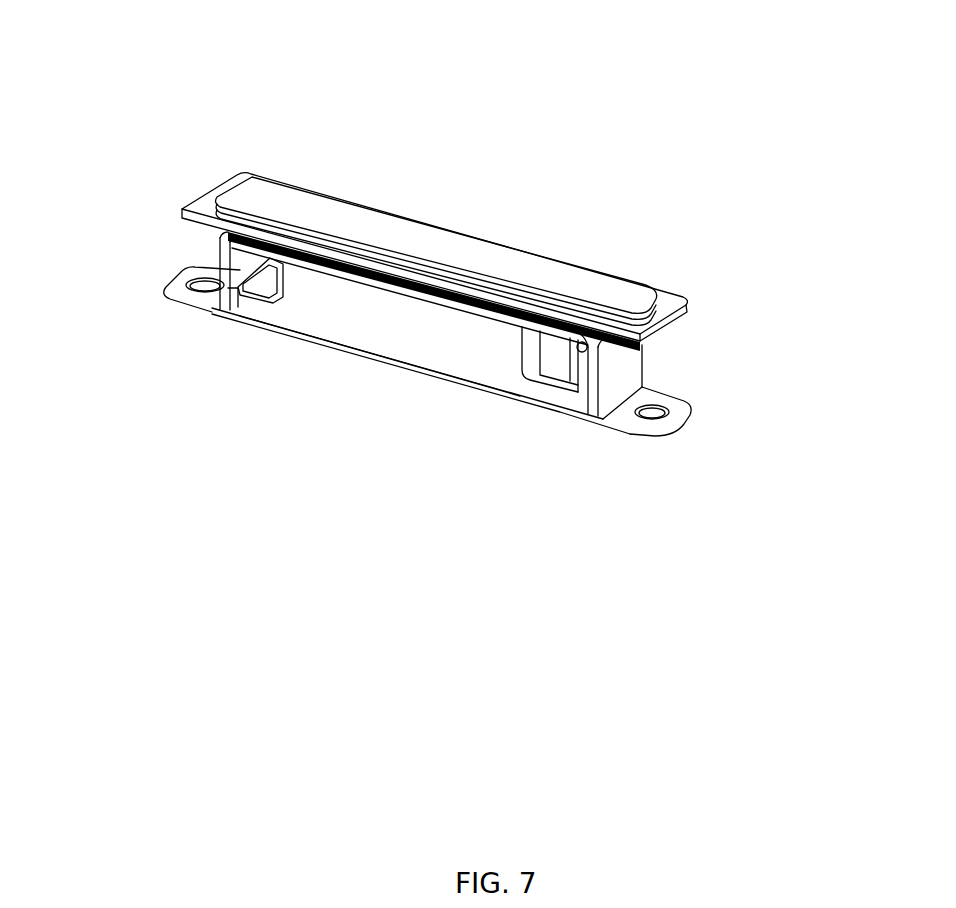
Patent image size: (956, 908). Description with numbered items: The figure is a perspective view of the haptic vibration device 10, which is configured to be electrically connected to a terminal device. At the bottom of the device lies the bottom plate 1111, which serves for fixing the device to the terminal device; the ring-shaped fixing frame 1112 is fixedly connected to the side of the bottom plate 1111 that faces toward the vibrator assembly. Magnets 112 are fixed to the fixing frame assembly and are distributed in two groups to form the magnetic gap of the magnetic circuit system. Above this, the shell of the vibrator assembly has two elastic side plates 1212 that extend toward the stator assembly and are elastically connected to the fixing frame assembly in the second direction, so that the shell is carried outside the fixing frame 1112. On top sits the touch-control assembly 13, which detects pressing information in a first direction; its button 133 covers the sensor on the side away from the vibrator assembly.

The haptic vibration device 10 is at (218, 40).
The touch-control assembly 13 is at (544, 258).
The button 133 is at (473, 234).
The side plates 1212 is at (231, 264).
The bottom plate 1111 is at (628, 433).
The fixing frame 1112 is at (504, 384).
The magnets 112 is at (560, 355).